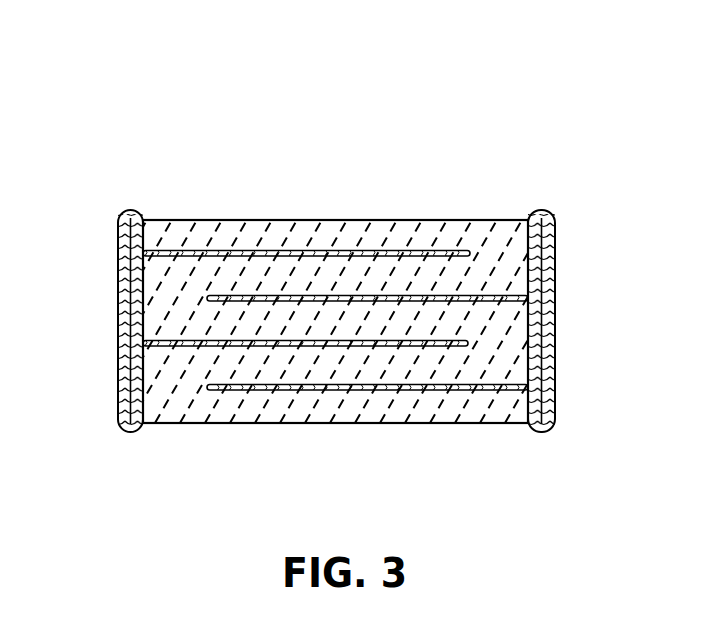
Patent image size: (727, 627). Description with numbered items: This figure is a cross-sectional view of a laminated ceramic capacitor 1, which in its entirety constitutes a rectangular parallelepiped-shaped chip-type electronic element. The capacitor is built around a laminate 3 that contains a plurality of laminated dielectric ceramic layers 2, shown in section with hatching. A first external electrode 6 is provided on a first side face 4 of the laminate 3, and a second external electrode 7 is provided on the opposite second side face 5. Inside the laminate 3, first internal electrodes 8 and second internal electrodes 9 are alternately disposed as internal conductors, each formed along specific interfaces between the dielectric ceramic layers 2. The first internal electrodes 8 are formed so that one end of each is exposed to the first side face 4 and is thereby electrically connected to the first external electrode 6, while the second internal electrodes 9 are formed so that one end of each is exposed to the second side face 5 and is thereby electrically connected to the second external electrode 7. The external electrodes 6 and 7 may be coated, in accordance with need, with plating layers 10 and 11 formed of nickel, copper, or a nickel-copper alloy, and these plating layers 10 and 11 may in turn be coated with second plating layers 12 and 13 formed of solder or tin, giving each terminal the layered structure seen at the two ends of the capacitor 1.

The laminated ceramic capacitor 1 is at (170, 180).
The dielectric ceramic layers 2 is at (323, 317).
The laminate 3 is at (310, 428).
The first side face 4 is at (118, 300).
The second side face 5 is at (545, 323).
The first external electrode 6 is at (118, 263).
The second external electrode 7 is at (545, 253).
The first internal electrodes 8 is at (218, 343).
The second internal electrodes 9 is at (437, 301).
The plating layer 10 is at (118, 353).
The plating layer 11 is at (545, 367).
The second plating layer 12 is at (118, 403).
The second plating layer 13 is at (545, 408).